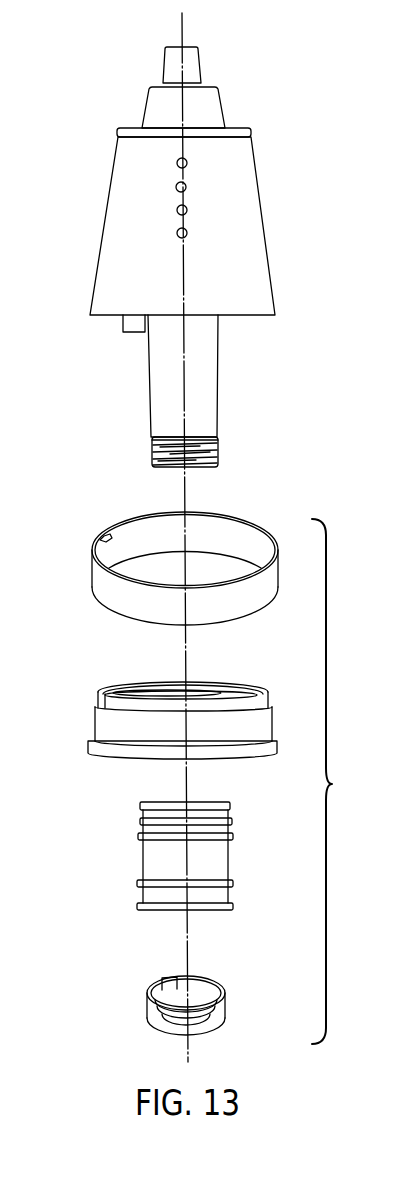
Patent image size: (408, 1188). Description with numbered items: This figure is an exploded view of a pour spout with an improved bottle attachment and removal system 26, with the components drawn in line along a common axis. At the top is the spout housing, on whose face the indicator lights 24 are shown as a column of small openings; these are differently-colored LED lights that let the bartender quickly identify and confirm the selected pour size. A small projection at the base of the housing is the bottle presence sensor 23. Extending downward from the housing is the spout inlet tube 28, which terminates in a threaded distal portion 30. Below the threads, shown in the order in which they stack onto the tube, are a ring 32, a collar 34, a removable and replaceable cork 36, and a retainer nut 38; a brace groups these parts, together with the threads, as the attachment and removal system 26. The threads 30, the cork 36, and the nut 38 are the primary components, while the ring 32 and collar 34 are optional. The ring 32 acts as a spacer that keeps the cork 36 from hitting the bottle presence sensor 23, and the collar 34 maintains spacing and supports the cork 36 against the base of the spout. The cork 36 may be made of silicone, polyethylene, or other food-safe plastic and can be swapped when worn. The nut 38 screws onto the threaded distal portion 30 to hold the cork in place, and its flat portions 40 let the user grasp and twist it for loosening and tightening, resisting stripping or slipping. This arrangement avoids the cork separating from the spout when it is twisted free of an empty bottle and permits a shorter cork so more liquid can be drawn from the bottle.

The bottle presence sensor 23 is at (122, 320).
The indicator lights 24 is at (178, 200).
The bottle attachment and removal system 26 is at (338, 781).
The spout inlet tube 28 is at (162, 380).
The threaded distal portion 30 is at (218, 447).
The ring 32 is at (97, 574).
The collar 34 is at (97, 727).
The removable and replaceable cork 36 is at (148, 870).
The retainer nut 38 is at (218, 992).
The flat portions 40 is at (167, 984).